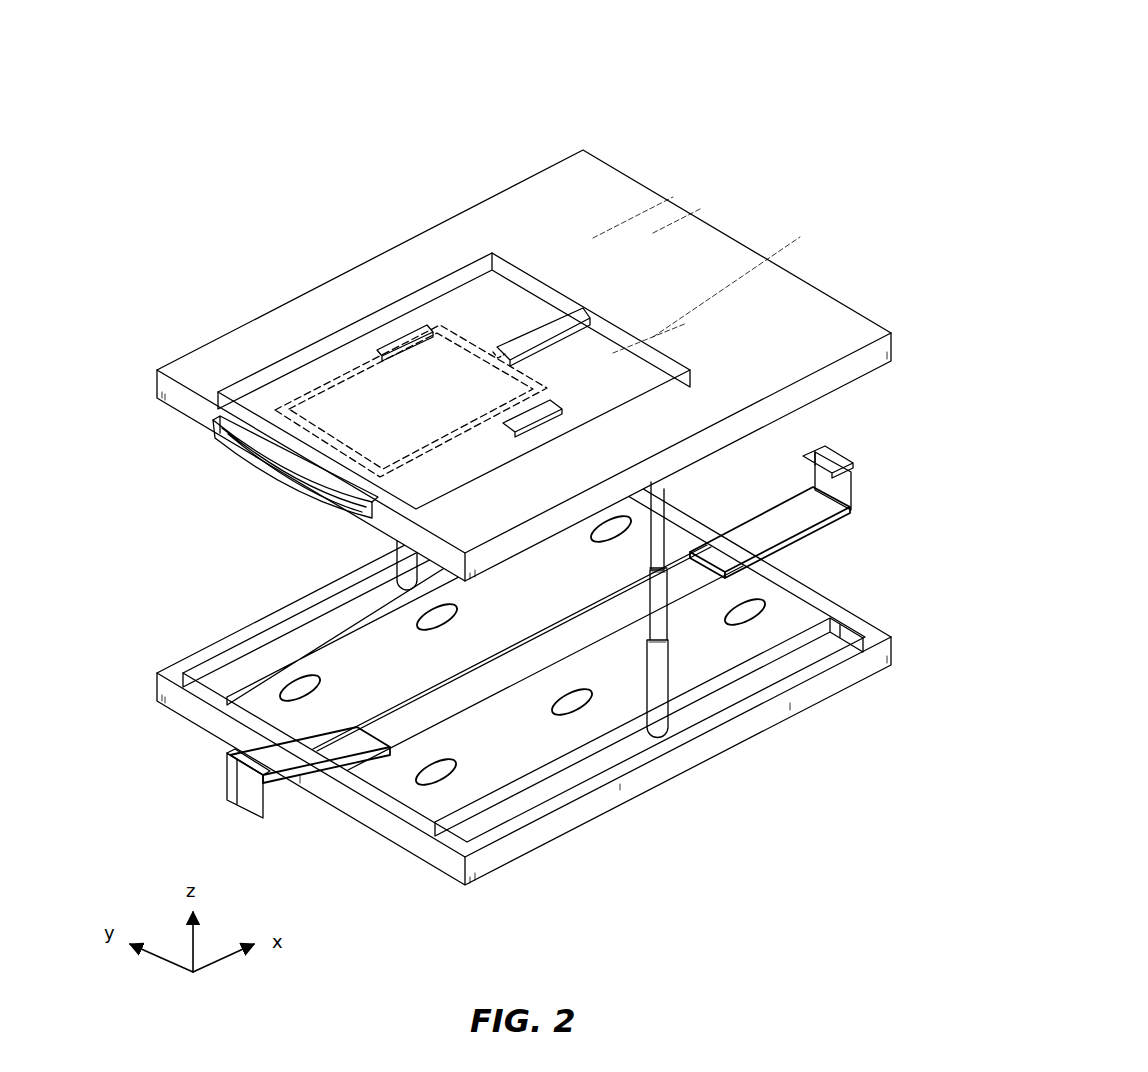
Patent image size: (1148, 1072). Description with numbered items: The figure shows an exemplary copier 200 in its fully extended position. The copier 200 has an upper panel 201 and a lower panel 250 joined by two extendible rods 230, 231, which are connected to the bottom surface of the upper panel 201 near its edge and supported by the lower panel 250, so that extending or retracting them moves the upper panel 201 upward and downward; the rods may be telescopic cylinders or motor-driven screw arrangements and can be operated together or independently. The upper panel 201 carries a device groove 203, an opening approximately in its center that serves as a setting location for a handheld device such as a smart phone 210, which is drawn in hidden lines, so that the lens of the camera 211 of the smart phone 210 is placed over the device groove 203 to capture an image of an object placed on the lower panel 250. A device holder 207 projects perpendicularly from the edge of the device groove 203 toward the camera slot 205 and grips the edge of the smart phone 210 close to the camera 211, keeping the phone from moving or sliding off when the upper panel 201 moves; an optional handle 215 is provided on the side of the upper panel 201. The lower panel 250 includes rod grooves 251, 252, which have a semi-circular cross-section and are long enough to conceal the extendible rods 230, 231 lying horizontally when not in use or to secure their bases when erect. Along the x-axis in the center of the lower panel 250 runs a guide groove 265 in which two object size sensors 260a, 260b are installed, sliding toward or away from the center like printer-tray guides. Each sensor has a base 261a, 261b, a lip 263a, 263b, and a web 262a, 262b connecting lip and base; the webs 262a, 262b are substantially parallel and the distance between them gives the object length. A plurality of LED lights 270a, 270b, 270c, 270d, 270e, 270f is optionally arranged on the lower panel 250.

The copier 200 is at (516, 446).
The upper panel 201 is at (765, 247).
The device groove 203 is at (440, 315).
The camera slot 205 is at (562, 410).
The device holder 207 is at (577, 320).
The smart phone 210 is at (440, 457).
The camera 211 is at (500, 360).
The handle 215 is at (265, 468).
The extendible rod 230 is at (665, 737).
The extendible rod 231 is at (397, 566).
The lower panel 250 is at (617, 808).
The rod groove 251 is at (325, 628).
The rod groove 252 is at (532, 788).
The object size sensor 260a is at (246, 790).
The object size sensor 260b is at (809, 496).
The base 261a is at (297, 800).
The base 261b is at (803, 535).
The web 262a is at (237, 800).
The web 262b is at (863, 486).
The lip 263a is at (230, 755).
The lip 263b is at (827, 458).
The guide groove 265 is at (430, 707).
The LED light 270a is at (318, 680).
The LED light 270b is at (453, 610).
The LED light 270c is at (625, 540).
The LED light 270d is at (450, 764).
The LED light 270e is at (588, 695).
The LED light 270f is at (765, 592).